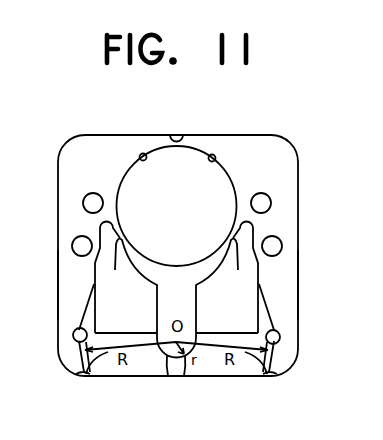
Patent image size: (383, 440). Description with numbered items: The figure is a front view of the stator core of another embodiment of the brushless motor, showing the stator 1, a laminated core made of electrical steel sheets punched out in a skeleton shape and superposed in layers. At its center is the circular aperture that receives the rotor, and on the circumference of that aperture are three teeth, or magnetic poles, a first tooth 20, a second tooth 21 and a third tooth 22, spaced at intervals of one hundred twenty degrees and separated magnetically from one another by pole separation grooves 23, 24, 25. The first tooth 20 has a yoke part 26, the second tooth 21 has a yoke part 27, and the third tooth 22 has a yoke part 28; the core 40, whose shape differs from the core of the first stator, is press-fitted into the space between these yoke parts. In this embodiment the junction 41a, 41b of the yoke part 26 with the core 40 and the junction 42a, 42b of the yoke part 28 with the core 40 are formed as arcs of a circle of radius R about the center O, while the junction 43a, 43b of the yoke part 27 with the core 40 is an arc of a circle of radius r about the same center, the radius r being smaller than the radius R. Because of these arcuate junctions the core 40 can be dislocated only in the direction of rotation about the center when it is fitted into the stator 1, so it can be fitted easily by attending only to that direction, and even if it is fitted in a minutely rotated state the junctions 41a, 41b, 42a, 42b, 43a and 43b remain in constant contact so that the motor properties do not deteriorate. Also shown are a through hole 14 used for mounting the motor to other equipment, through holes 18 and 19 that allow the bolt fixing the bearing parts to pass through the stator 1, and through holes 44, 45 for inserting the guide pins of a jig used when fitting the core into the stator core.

The stator 1 is at (260, 135).
The through hole 14 is at (73, 243).
The through hole 18 is at (270, 198).
The through hole 19 is at (84, 198).
The first tooth 20 is at (213, 156).
The second tooth 21 is at (200, 272).
The third tooth 22 is at (145, 153).
The pole separation groove 23 is at (177, 134).
The pole separation groove 24 is at (243, 278).
The pole separation groove 25 is at (112, 278).
The yoke part 26 is at (288, 282).
The yoke part 27 is at (158, 305).
The yoke part 28 is at (68, 282).
The core 40 is at (219, 366).
The junction 41a is at (283, 373).
The junction 41b is at (258, 368).
The junction 42a is at (102, 366).
The junction 42b is at (79, 375).
The junction 43a is at (179, 356).
The junction 43b is at (168, 362).
The through hole 44 is at (280, 337).
The through hole 45 is at (73, 336).